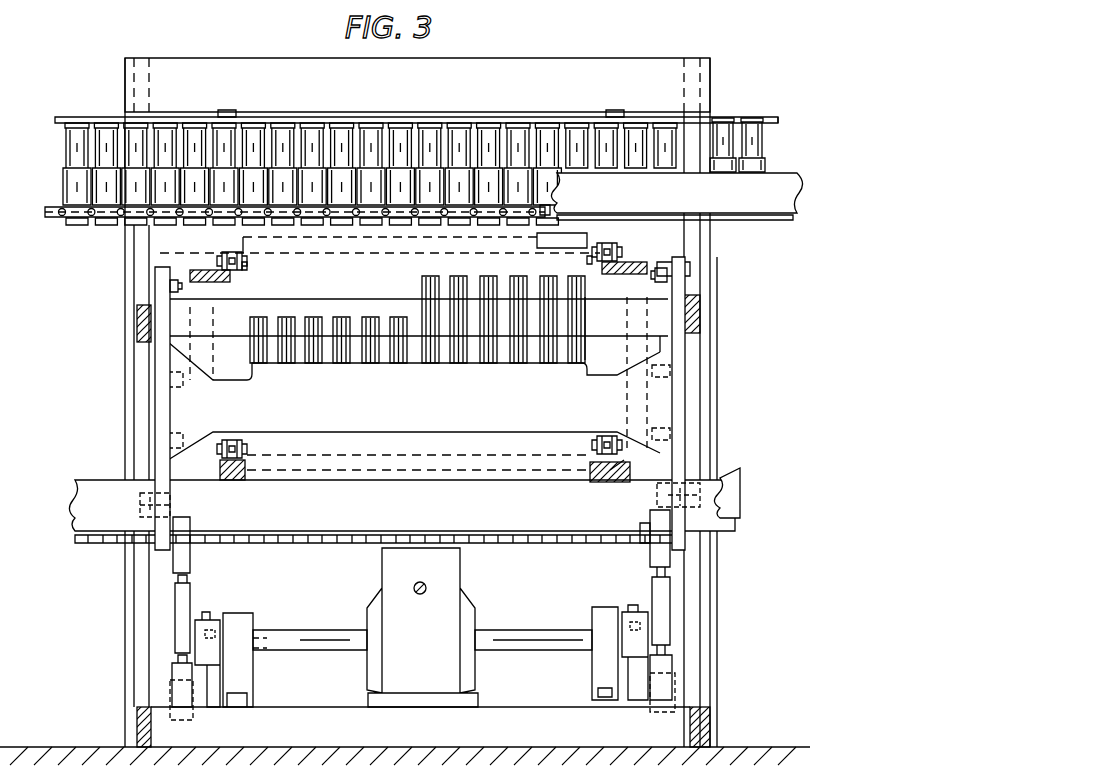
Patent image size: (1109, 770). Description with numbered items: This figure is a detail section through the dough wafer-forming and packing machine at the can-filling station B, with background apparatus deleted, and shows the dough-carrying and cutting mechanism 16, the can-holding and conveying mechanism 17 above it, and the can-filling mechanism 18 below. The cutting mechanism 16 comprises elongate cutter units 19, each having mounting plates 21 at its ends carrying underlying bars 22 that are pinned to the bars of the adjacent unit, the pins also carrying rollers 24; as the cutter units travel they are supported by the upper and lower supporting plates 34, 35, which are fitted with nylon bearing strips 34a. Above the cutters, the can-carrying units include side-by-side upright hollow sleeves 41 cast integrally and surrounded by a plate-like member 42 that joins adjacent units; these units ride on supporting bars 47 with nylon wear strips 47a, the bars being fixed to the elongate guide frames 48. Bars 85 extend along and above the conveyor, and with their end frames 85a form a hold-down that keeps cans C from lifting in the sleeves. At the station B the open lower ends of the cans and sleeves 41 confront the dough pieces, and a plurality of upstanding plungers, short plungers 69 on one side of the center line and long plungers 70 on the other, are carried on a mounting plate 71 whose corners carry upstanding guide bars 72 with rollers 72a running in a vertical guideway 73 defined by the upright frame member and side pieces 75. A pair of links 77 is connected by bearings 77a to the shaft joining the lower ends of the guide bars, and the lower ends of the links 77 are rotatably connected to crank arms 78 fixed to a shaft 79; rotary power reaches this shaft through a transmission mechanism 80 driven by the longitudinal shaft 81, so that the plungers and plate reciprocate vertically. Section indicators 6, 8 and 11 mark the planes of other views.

The dough-carrying and cutting mechanism 16 is at (684, 243).
The can-holding and conveying mechanism 17 is at (741, 91).
The can-filling mechanism 18 is at (662, 344).
The cutter units 19 is at (395, 252).
The mounting plates 21 is at (596, 256).
The underlying bars 22 is at (647, 230).
The rollers 24 is at (230, 254).
The upper supporting plate 34 is at (224, 280).
The nylon bearing strips 34a is at (244, 269).
The lower supporting plate 35 is at (618, 470).
The sleeves 41 is at (77, 184).
The plate-like member 42 is at (75, 210).
The supporting bars 47 is at (770, 215).
The nylon wear strips 47a is at (558, 215).
The elongate guide frames 48 is at (435, 352).
The short plungers 69 is at (398, 363).
The long plungers 70 is at (458, 363).
The mounting plate 71 is at (415, 378).
The guide bars 72 is at (158, 405).
The rollers 72a is at (144, 280).
The guideway 73 is at (710, 413).
The side pieces 75 is at (695, 568).
The links 77 is at (190, 602).
The bearings 77a is at (642, 526).
The crank arms 78 is at (208, 700).
The shaft 79 is at (513, 640).
The transmission mechanism 80 is at (422, 627).
The shaft 81 is at (416, 583).
The bars 85 is at (425, 92).
The end frames 85a is at (228, 110).
The section line 6 is at (98, 290).
The section line 8 is at (502, 230).
The section line 11 is at (476, 127).
The can-filling station B is at (98, 292).
The can C is at (542, 131).